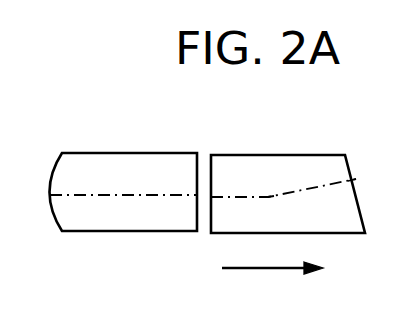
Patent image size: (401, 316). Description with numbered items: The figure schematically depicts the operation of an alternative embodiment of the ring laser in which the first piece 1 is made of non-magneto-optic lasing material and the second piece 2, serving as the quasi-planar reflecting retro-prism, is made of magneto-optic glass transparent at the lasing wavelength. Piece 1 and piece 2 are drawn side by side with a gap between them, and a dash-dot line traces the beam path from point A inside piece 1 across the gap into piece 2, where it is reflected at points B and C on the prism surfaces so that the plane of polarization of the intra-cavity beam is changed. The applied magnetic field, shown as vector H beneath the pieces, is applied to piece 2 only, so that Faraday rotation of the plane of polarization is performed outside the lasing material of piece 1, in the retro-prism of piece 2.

The piece 1 is at (160, 153).
The piece 2 is at (281, 155).
The point A is at (41, 195).
The point B is at (273, 211).
The point C is at (360, 184).
The magnetic field vector H is at (272, 280).